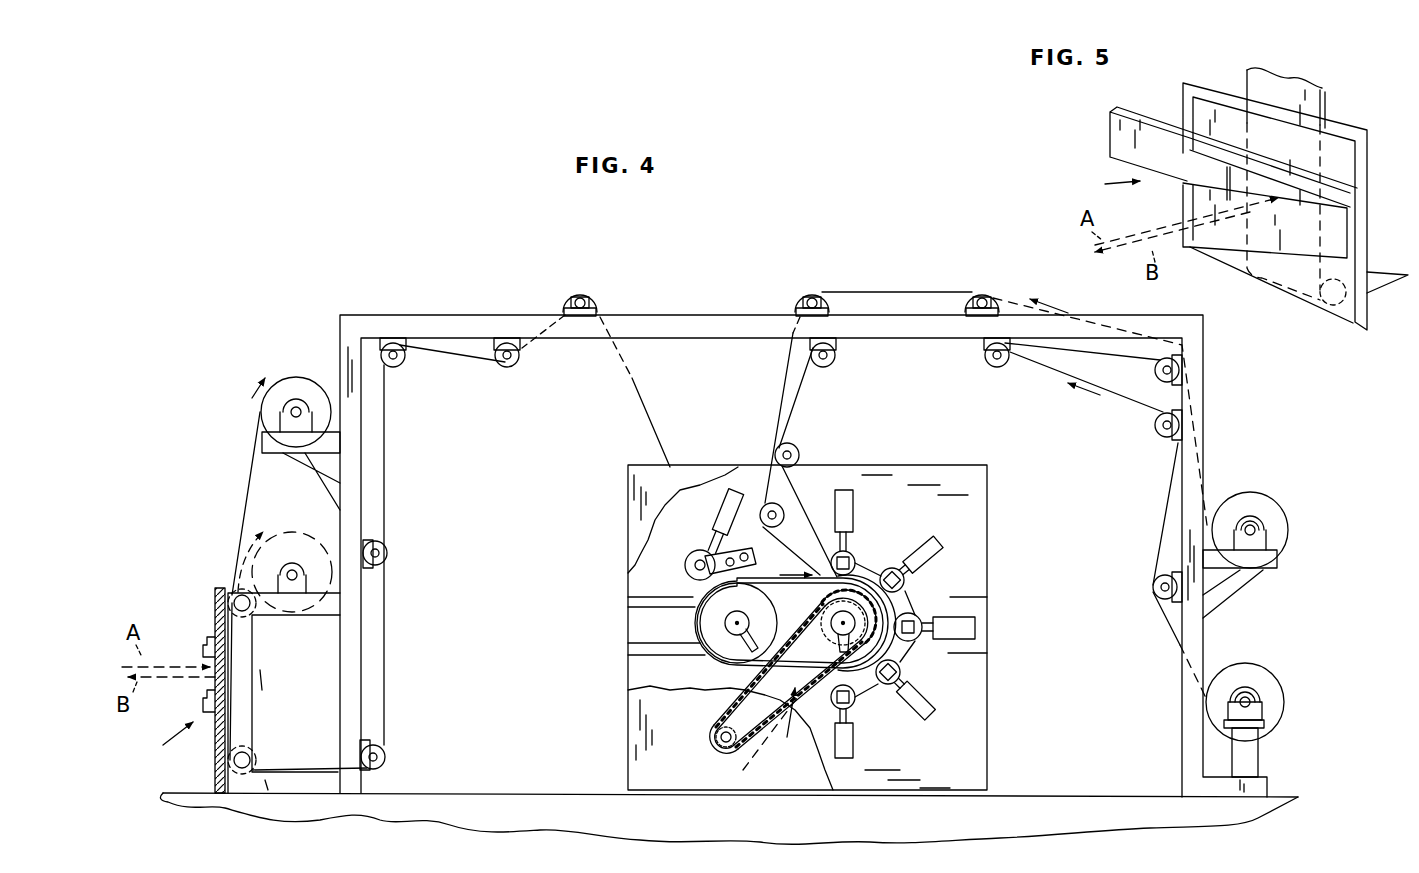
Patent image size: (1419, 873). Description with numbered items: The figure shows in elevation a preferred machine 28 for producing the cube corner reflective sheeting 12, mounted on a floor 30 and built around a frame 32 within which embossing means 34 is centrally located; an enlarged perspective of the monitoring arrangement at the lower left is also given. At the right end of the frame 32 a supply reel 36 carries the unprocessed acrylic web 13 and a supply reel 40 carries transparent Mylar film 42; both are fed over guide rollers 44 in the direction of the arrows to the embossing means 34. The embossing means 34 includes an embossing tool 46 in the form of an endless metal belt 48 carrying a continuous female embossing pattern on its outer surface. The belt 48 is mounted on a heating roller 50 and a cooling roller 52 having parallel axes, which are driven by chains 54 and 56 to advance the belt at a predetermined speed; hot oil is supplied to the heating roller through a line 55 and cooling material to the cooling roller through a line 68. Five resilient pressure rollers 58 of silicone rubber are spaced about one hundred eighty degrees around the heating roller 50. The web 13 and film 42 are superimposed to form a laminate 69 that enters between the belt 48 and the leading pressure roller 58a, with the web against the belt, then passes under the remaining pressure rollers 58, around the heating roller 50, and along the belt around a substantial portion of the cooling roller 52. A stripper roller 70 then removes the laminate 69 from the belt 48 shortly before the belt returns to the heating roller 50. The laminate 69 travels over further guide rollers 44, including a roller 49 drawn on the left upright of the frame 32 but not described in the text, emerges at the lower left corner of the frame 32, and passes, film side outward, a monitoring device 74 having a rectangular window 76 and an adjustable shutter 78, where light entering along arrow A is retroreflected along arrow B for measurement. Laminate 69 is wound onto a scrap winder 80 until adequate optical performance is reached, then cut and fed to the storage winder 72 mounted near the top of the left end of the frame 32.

In FIG. 5, the cube corner sheeting 12 is at (1328, 104).
In FIG. 4, the acrylic web 13 is at (1210, 498).
In FIG. 4, the machine 28 is at (613, 292).
In FIG. 4, the floor 30 is at (1032, 793).
In FIG. 4, the frame 32 is at (432, 313).
In FIG. 4, the embossing means 34 is at (999, 516).
In FIG. 4, the supply reel 36 is at (1283, 518).
In FIG. 4, the supply reel 40 is at (1272, 683).
In FIG. 4, the Mylar film 42 is at (1125, 397).
In FIG. 4, the guide rollers 44 is at (806, 295).
In FIG. 5, the guide rollers 44 is at (1335, 305).
In FIG. 4, the embossing tool 46 is at (772, 729).
In FIG. 4, the endless metal belt 48 is at (760, 582).
In FIG. 4, the guide pulley 49 is at (392, 553).
In FIG. 4, the heating roller 50 is at (863, 670).
In FIG. 4, the cooling roller 52 is at (713, 652).
In FIG. 4, the chain 54 is at (812, 710).
In FIG. 4, the line 55 is at (860, 623).
In FIG. 4, the chain 56 is at (700, 737).
In FIG. 4, the pressure rollers 58 is at (905, 581).
In FIG. 4, the leading pressure roller 58a is at (855, 558).
In FIG. 4, the line 68 is at (737, 623).
In FIG. 4, the laminate 69 is at (637, 385).
In FIG. 5, the laminate 69 is at (1390, 288).
In FIG. 4, the stripper roller 70 is at (688, 560).
In FIG. 4, the storage winder 72 is at (290, 388).
In FIG. 4, the monitoring device 74 is at (163, 742).
In FIG. 5, the monitoring device 74 is at (1106, 185).
In FIG. 4, the rectangular window 76 is at (213, 683).
In FIG. 5, the rectangular window 76 is at (1337, 222).
In FIG. 4, the adjustable shutter 78 is at (198, 690).
In FIG. 5, the adjustable shutter 78 is at (1115, 135).
In FIG. 4, the scrap winder 80 is at (290, 533).